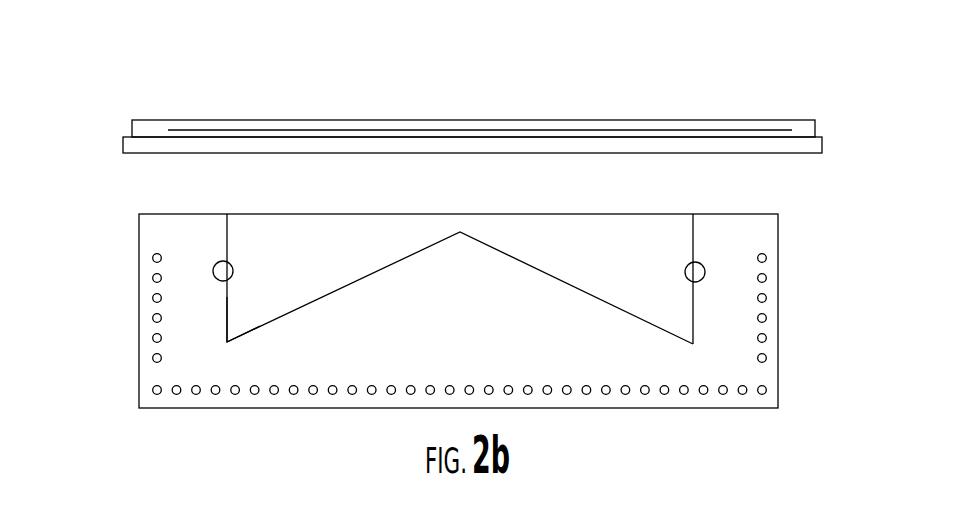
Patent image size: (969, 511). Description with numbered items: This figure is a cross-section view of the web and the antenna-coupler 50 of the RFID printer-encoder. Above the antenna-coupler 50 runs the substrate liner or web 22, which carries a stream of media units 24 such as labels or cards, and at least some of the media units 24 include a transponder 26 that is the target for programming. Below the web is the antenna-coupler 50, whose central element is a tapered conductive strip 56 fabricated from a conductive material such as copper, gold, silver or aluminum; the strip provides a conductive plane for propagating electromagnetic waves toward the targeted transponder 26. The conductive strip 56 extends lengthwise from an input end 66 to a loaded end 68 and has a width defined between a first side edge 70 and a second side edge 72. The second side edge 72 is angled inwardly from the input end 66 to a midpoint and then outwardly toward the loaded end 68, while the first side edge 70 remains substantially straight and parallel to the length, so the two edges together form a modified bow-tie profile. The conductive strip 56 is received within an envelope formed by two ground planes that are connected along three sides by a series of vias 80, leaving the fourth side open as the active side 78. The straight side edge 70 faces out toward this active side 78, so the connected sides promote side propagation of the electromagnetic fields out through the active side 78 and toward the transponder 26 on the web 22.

The web 22 is at (815, 147).
The media units 24 is at (804, 127).
The transponder 26 is at (639, 130).
The antenna-coupler 50 is at (790, 420).
The conductive strip 56 is at (227, 297).
The input end 66 is at (695, 300).
The loaded end 68 is at (245, 312).
The first side edge 70 is at (285, 214).
The second side edge 72 is at (322, 297).
The active side 78 is at (190, 191).
The vias 80 is at (762, 338).